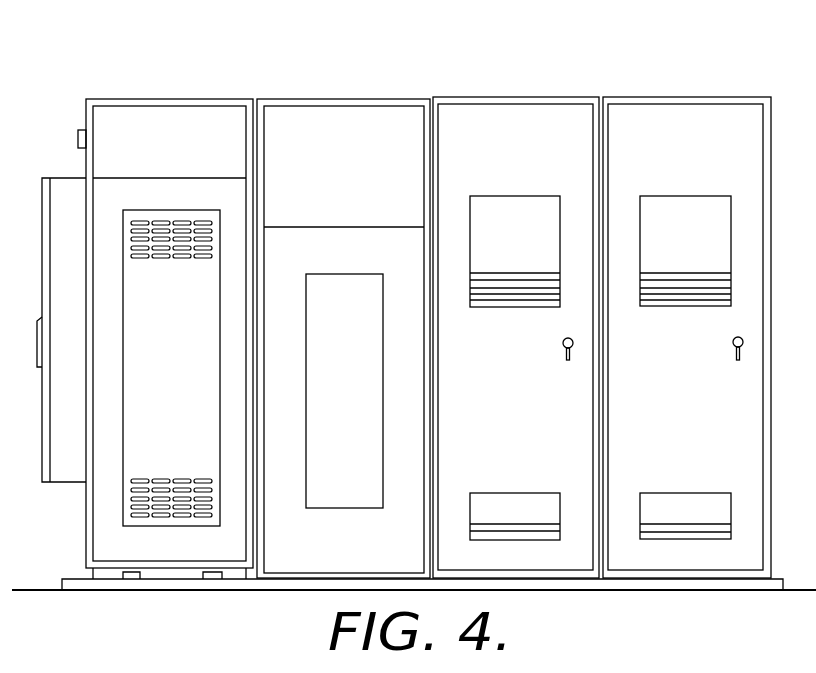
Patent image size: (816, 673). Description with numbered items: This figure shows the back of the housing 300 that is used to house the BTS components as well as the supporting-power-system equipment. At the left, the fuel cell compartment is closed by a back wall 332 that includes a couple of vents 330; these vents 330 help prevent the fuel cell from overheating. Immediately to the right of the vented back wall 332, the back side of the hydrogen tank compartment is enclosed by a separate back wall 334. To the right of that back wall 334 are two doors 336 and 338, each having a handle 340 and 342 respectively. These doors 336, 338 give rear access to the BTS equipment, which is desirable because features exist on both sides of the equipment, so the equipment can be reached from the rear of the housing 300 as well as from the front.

The housing 300 is at (606, 63).
The vents 330 is at (163, 479).
The back wall 332 is at (140, 192).
The back wall 334 is at (344, 153).
The door 336 is at (542, 168).
The door 338 is at (705, 167).
The handle 340 is at (561, 341).
The handle 342 is at (731, 342).